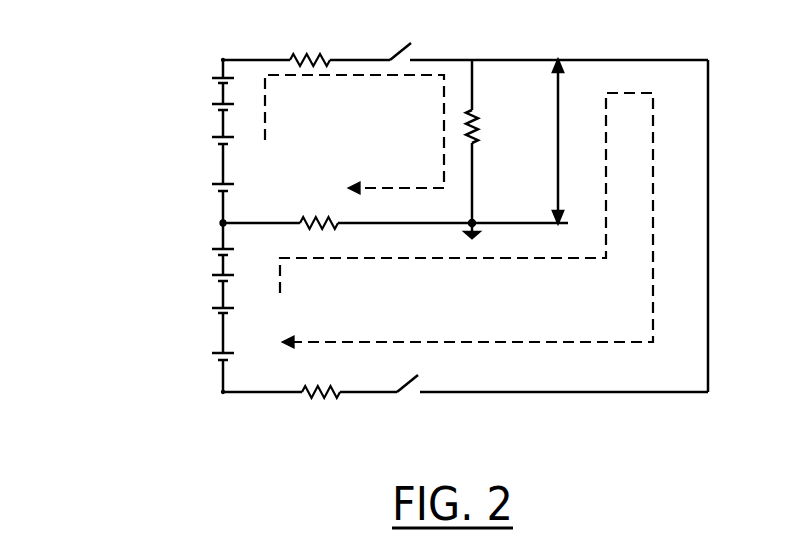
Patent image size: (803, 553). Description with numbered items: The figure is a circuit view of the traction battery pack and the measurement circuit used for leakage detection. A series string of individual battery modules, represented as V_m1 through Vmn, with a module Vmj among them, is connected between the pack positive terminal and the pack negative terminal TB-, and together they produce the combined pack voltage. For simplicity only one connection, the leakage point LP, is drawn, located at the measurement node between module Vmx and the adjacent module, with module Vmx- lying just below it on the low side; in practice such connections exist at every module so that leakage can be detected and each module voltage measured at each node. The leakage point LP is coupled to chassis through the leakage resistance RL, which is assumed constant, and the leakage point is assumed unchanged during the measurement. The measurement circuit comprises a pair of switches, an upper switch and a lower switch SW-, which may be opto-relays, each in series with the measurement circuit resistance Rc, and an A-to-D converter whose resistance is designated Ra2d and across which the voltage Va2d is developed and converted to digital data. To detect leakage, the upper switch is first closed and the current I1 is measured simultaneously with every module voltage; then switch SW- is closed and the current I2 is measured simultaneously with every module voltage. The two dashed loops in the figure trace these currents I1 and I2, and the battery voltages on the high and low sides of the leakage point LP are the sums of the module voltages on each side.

The traction battery pack negative TB- is at (226, 412).
The measurement circuit resistance Rc is at (315, 231).
The negative switch SW- is at (409, 402).
The battery module voltage Vmn is at (197, 205).
The battery module voltage Vmj is at (197, 260).
The battery module at measurement node Vmx is at (197, 249).
The battery module below measurement node Vmx- is at (197, 272).
The leakage point LP is at (224, 223).
The leakage resistance RL is at (319, 204).
The A/D measurement resistor Ra2d is at (499, 149).
The A/D measurement voltage Va2d is at (561, 141).
The first measurement current I1 is at (354, 134).
The second measurement current I2 is at (466, 220).